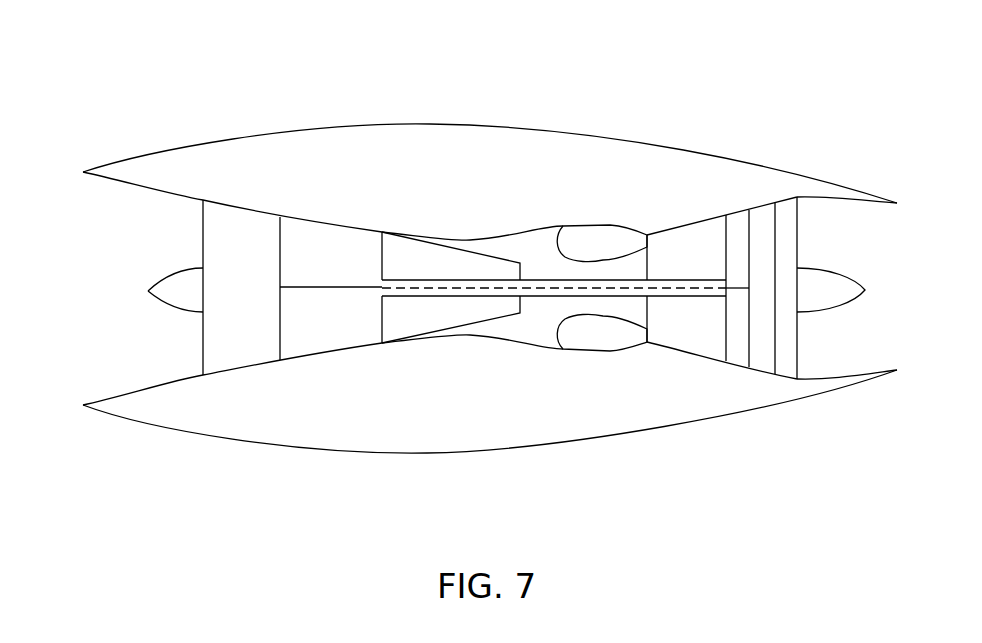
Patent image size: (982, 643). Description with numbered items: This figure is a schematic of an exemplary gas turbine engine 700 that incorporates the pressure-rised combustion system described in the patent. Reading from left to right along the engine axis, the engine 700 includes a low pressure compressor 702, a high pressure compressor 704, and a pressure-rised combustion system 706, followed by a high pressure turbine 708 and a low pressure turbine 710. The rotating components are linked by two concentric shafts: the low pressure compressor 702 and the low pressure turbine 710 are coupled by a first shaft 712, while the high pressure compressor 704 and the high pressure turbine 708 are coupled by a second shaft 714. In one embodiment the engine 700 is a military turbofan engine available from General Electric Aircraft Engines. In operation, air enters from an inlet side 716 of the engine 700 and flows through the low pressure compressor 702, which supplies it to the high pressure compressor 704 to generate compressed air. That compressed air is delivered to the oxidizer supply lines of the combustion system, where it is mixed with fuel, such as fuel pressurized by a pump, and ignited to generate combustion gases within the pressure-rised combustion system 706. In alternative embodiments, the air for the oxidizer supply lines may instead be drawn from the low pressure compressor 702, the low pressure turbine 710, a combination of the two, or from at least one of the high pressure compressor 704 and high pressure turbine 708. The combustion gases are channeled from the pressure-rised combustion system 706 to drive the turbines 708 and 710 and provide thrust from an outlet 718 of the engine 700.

The gas turbine engine 700 is at (559, 70).
The low pressure compressor 702 is at (220, 230).
The high pressure compressor 704 is at (398, 255).
The pressure-rised combustion system 706 is at (577, 235).
The high pressure turbine 708 is at (663, 237).
The low pressure turbine 710 is at (762, 213).
The first shaft 712 is at (355, 287).
The second shaft 714 is at (537, 297).
The inlet side 716 is at (148, 344).
The outlet 718 is at (900, 233).